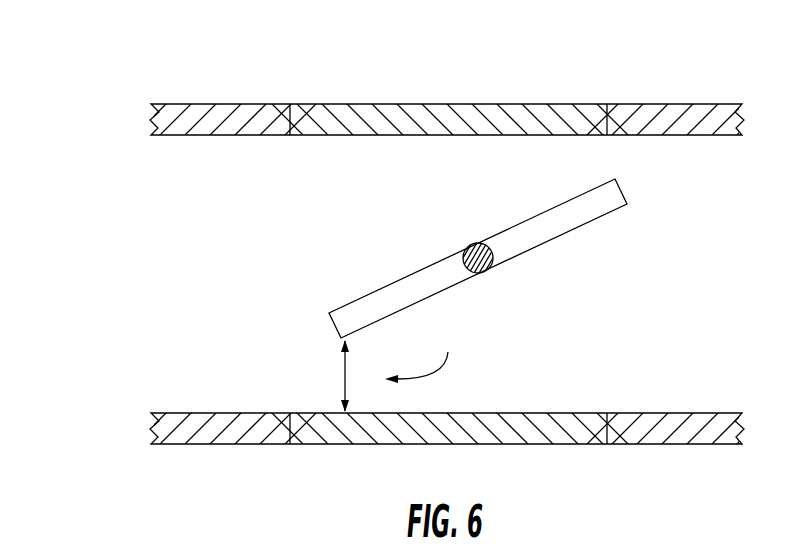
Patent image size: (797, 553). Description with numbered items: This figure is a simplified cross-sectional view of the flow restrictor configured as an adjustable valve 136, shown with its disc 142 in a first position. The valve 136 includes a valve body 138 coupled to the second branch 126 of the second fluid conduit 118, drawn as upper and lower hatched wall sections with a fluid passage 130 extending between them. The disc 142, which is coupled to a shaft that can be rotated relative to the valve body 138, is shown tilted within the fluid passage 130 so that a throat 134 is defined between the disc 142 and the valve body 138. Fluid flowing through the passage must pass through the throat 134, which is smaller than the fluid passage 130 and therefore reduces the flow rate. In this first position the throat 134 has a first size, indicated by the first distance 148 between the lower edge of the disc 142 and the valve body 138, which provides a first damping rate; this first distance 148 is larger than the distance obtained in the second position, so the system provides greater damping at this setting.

The adjustable valve 136 is at (110, 55).
The second fluid conduit 118 is at (215, 94).
The valve body 138 is at (382, 104).
The second branch 126 is at (675, 104).
The fluid passage 130 is at (262, 223).
The disc 142 is at (567, 234).
The throat 134 is at (424, 351).
The first distance 148 is at (343, 380).